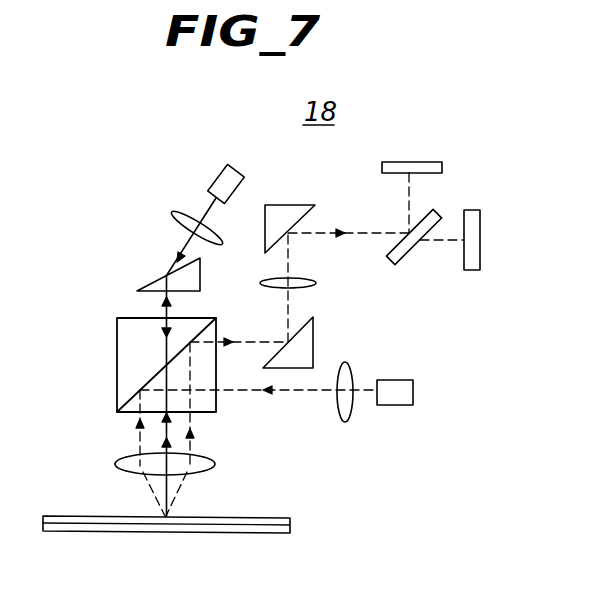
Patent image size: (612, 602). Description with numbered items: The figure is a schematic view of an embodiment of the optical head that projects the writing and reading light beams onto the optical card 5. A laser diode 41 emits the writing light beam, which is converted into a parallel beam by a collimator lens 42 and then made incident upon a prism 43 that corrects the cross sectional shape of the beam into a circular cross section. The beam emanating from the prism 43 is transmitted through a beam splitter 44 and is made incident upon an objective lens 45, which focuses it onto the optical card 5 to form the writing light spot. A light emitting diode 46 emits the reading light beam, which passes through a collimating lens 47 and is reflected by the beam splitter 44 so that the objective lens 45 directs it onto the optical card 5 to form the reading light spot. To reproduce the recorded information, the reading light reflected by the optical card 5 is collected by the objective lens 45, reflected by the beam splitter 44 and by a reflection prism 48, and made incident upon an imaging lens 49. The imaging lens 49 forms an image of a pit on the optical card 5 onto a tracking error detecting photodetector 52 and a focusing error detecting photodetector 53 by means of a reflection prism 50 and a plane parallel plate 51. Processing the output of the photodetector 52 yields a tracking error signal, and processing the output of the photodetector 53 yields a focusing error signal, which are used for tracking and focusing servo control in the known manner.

The optical card 5 is at (252, 533).
The laser diode 41 is at (226, 163).
The collimator lens 42 is at (182, 215).
The prism 43 is at (150, 283).
The beam splitter 44 is at (120, 343).
The objective lens 45 is at (215, 463).
The light emitting diode 46 is at (415, 379).
The lens 47 is at (353, 408).
The reflection prism 48 is at (315, 343).
The imaging lens 49 is at (317, 283).
The reflection prism 50 is at (305, 205).
The plane parallel plate 51 is at (440, 210).
The tracking error detecting photodetector 52 is at (482, 236).
The focusing error detecting photodetector 53 is at (428, 162).